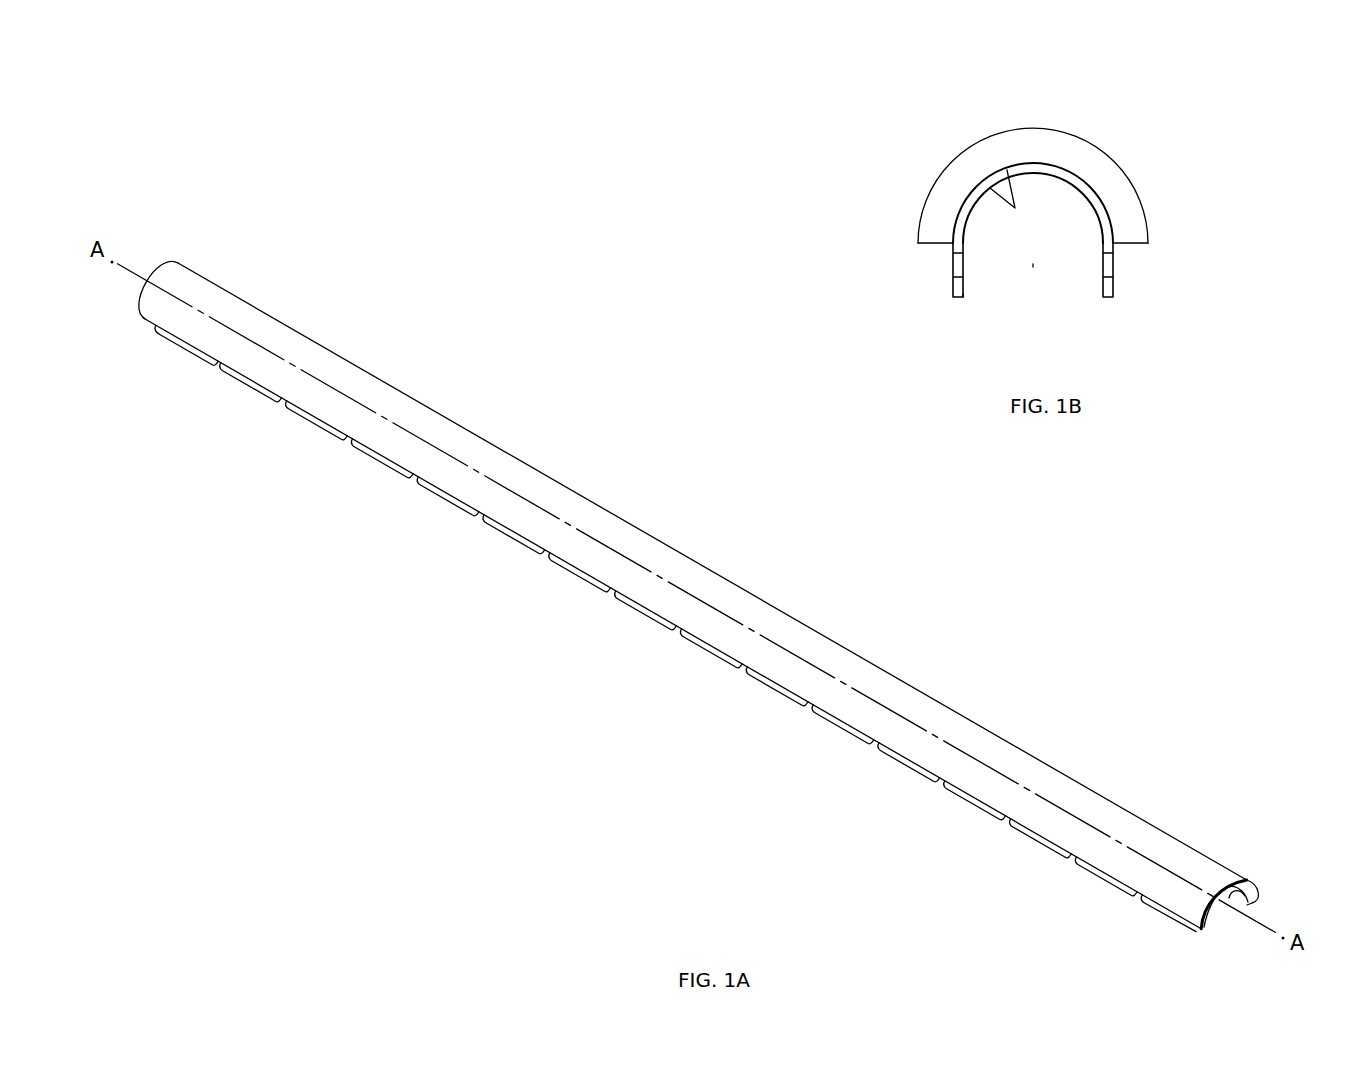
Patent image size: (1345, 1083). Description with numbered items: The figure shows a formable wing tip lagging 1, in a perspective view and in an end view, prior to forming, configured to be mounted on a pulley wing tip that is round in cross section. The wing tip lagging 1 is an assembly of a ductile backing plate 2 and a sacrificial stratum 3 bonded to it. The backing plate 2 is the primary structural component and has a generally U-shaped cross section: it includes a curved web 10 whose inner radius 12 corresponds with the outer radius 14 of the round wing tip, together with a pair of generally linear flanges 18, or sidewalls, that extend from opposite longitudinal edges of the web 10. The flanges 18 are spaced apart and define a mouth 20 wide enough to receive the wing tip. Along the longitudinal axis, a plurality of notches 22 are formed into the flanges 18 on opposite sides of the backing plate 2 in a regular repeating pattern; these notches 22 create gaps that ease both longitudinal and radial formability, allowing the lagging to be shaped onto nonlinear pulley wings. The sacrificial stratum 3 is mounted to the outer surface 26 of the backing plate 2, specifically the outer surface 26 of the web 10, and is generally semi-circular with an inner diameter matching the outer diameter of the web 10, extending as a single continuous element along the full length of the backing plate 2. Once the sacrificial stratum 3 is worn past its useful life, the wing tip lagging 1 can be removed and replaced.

In FIG. 1A, the wing tip lagging 1 is at (692, 660).
In FIG. 1B, the wing tip lagging 1 is at (942, 298).
In FIG. 1A, the backing plate 2 is at (183, 346).
In FIG. 1B, the backing plate 2 is at (963, 297).
In FIG. 1A, the sacrificial stratum 3 is at (312, 338).
In FIG. 1B, the sacrificial stratum 3 is at (1130, 178).
In FIG. 1B, the curved web 10 is at (1030, 164).
In FIG. 1B, the inner radius 12 is at (1007, 170).
In FIG. 1B, the outer radius 14 is at (973, 188).
In FIG. 1A, the flanges 18 is at (578, 572).
In FIG. 1B, the flanges 18 is at (1113, 287).
In FIG. 1B, the mouth 20 is at (1033, 267).
In FIG. 1A, the notches 22 is at (348, 437).
In FIG. 1B, the outer surface 26 is at (1034, 168).